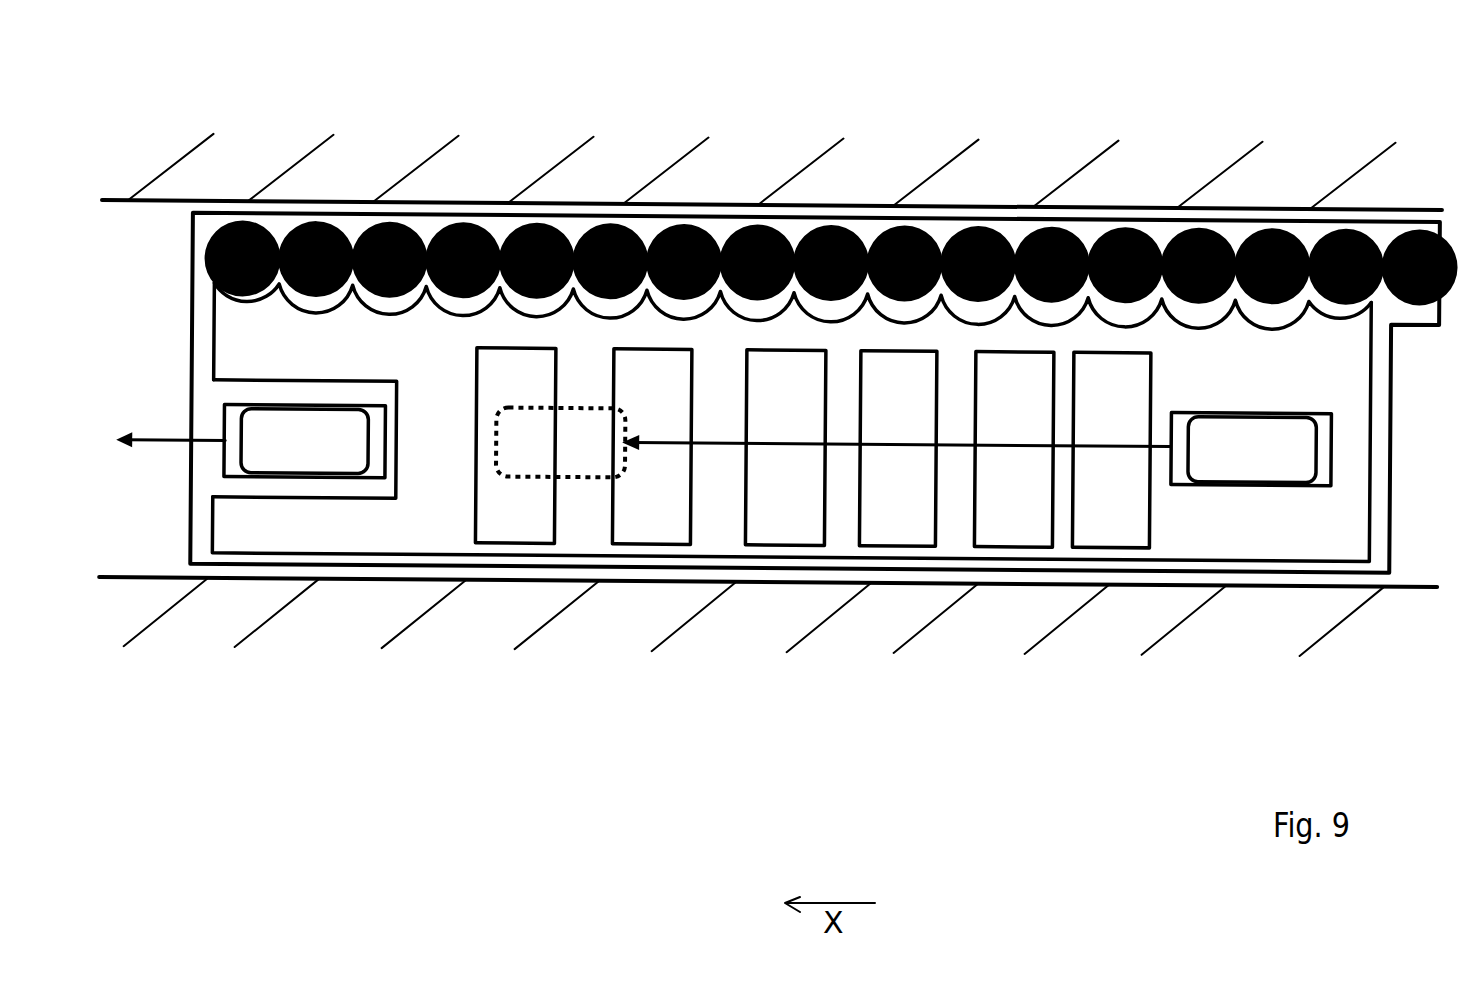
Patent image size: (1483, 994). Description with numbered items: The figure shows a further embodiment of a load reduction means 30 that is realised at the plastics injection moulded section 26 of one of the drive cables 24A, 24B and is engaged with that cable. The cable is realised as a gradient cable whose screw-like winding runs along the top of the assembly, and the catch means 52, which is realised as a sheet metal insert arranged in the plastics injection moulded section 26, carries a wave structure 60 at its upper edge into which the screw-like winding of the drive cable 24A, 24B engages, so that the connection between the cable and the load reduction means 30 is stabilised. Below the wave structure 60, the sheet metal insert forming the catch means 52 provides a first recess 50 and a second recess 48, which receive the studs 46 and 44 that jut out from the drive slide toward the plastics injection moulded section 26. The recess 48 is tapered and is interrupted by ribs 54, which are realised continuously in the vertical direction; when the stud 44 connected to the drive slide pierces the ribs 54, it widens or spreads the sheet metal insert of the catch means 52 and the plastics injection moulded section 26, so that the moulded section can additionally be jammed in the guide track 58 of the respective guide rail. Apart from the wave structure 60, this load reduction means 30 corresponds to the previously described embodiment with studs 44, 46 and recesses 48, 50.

The drive cable 24A is at (244, 228).
The drive cable 24B is at (244, 228).
The plastics injection moulded section 26 is at (210, 474).
The load reduction means 30 is at (192, 568).
The stud 44 is at (1268, 452).
The stud 46 is at (333, 443).
The recess 48 is at (1172, 485).
The recess 50 is at (238, 476).
The catch means 52 is at (227, 347).
The ribs 54 is at (575, 498).
The guide track 58 is at (118, 578).
The wave structure 60 is at (1270, 325).